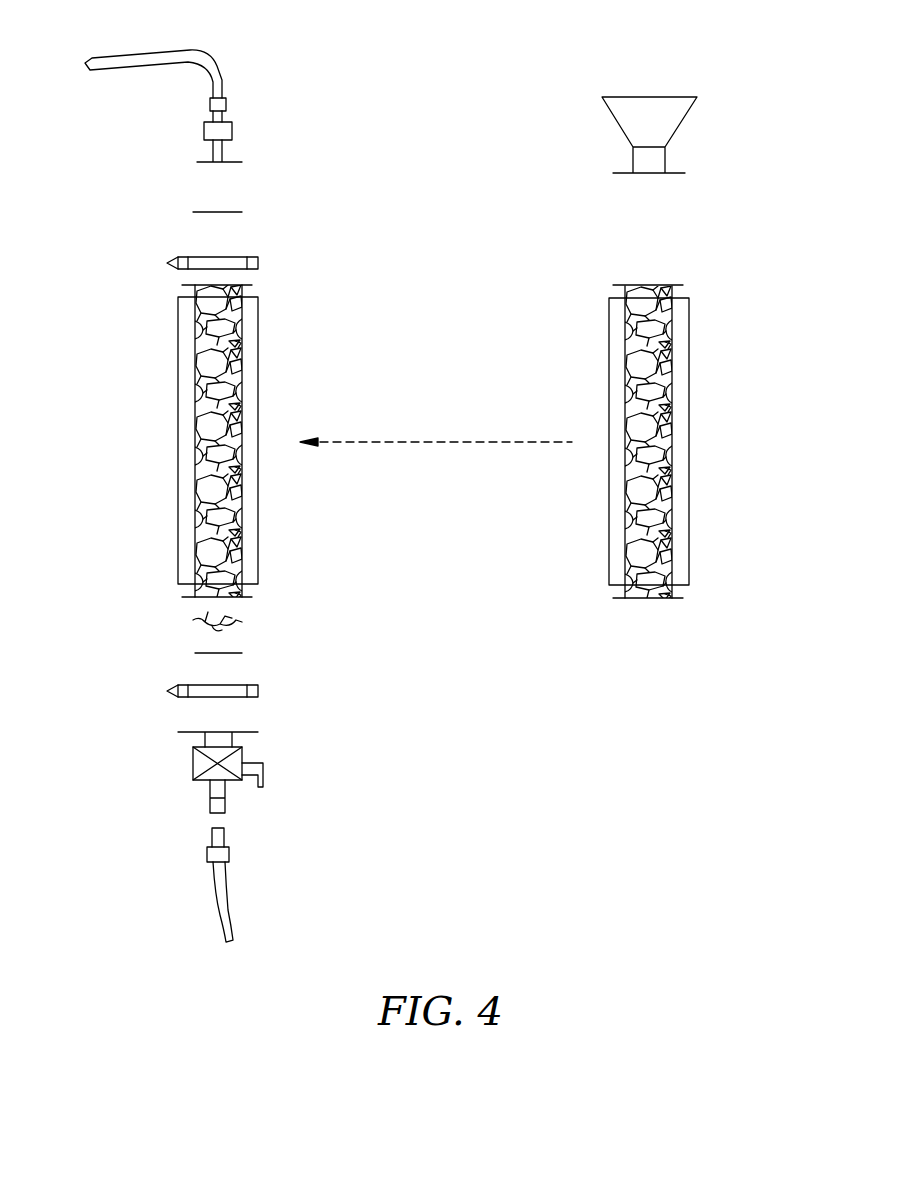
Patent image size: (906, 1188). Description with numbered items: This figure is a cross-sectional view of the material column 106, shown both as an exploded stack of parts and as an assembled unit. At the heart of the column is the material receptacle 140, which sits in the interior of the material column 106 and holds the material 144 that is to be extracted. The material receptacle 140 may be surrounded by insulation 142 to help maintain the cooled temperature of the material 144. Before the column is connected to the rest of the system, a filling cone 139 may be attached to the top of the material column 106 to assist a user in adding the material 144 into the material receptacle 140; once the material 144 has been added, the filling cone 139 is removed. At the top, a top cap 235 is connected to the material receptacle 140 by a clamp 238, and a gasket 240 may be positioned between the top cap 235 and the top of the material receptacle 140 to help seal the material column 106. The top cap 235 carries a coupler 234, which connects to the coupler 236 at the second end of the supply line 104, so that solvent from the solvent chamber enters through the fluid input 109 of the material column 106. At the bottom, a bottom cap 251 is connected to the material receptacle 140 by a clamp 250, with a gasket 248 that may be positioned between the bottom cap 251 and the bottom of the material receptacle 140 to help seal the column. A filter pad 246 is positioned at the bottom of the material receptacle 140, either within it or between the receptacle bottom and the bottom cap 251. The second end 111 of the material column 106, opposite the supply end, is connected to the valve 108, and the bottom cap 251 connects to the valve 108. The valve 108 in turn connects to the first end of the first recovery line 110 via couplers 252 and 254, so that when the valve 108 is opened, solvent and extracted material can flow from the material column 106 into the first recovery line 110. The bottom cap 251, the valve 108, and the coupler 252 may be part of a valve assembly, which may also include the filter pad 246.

The supply line 104 is at (138, 53).
The coupler 236 is at (210, 105).
The coupler 234 is at (204, 131).
The top cap 235 is at (200, 162).
The gasket 240 is at (203, 206).
The clamp 238 is at (162, 261).
The material receptacle 140 is at (193, 292).
The insulation 142 is at (187, 380).
The material 144 is at (203, 447).
The material column 106 is at (283, 332).
The fluid input 109 is at (675, 284).
The second end 111 is at (252, 597).
The filling cone 139 is at (617, 122).
The filter pad 246 is at (193, 622).
The gasket 248 is at (198, 652).
The clamp 250 is at (162, 689).
The bottom cap 251 is at (182, 731).
The valve 108 is at (193, 763).
The coupler 252 is at (210, 807).
The coupler 254 is at (207, 857).
The first recovery line 110 is at (215, 915).